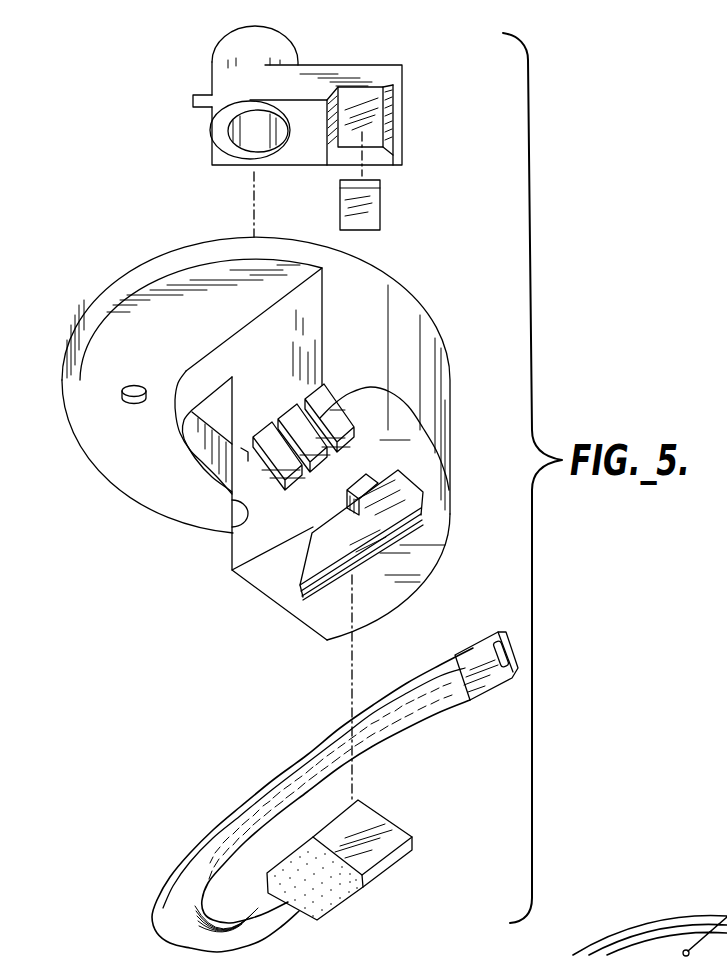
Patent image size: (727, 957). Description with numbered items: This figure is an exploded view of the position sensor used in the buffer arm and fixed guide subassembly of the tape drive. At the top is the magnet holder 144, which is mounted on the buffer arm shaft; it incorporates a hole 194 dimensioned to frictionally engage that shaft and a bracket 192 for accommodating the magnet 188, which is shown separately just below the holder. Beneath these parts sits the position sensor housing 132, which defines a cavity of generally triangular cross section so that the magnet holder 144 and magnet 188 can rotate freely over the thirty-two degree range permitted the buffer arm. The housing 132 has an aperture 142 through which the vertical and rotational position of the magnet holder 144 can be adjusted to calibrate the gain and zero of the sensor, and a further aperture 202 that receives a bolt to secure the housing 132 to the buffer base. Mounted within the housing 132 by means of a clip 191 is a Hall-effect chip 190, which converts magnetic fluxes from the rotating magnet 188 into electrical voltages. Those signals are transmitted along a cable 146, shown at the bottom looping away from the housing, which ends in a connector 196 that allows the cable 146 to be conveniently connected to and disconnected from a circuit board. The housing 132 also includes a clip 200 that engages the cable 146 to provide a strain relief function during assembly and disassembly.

The position sensor housing 132 is at (406, 312).
The aperture 142 is at (217, 496).
The magnet holder 144 is at (294, 31).
The cable 146 is at (428, 712).
The magnet 188 is at (381, 215).
The Hall-effect chip 190 is at (393, 857).
The clip 191 is at (363, 528).
The bracket 192 is at (370, 100).
The hole 194 is at (224, 142).
The connector 196 is at (490, 632).
The clip 200 is at (333, 417).
The aperture 202 is at (124, 405).